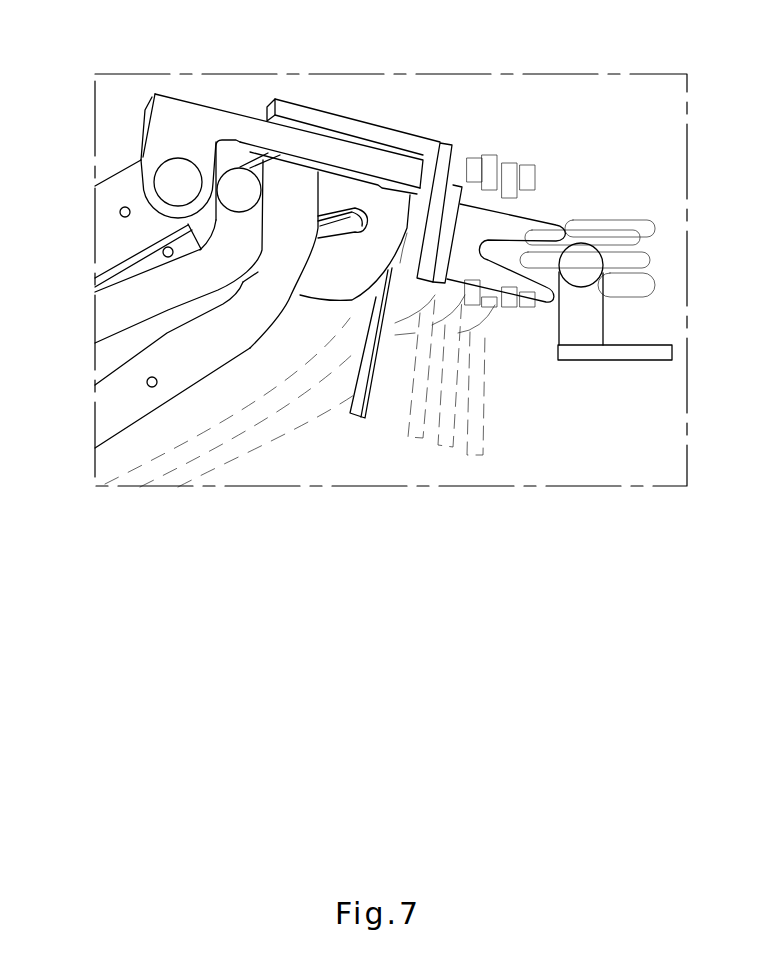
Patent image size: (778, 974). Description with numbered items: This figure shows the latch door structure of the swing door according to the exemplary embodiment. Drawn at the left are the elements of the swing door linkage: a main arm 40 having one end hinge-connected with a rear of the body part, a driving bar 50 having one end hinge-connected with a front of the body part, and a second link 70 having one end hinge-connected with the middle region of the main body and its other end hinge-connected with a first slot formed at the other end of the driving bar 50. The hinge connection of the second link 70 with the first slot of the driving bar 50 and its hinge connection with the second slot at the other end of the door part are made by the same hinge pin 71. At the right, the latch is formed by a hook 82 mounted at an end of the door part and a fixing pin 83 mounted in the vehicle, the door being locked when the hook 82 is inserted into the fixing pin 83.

The main arm 40 is at (112, 206).
The driving bar 50 is at (112, 411).
The second link 70 is at (112, 318).
The hinge pin 71 is at (243, 182).
The hook 82 is at (512, 227).
The fixing pin 83 is at (597, 263).